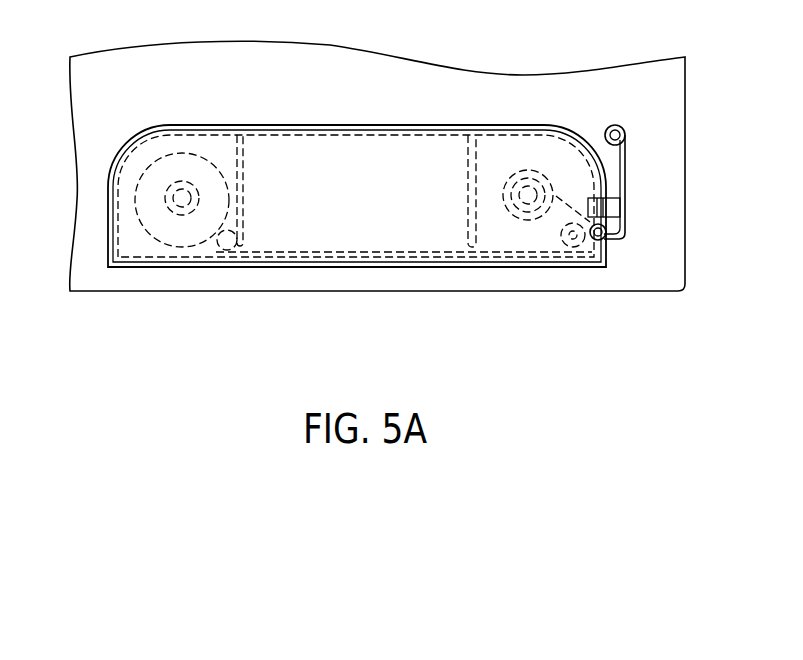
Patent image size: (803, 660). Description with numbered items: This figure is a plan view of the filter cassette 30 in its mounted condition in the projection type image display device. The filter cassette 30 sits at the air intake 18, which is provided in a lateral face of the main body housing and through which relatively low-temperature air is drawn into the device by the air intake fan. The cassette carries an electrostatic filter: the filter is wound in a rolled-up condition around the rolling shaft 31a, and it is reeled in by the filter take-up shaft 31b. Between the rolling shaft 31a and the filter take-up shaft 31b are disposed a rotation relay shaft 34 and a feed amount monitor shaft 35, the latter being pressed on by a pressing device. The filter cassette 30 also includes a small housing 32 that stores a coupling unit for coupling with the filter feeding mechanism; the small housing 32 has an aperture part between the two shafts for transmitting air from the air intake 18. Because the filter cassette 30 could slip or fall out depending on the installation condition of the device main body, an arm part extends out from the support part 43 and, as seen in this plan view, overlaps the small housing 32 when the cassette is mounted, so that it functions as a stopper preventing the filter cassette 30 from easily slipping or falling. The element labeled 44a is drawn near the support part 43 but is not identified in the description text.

The air intake 18 is at (685, 113).
The filter cassette 30 is at (549, 123).
The small housing 32 is at (107, 235).
The rolling shaft 31a is at (173, 212).
The rotation relay shaft 34 is at (227, 250).
The filter take-up shaft 31b is at (514, 216).
The feed amount monitor shaft 35 is at (572, 248).
The support part 43 is at (626, 165).
The engaging portion 44a is at (614, 210).